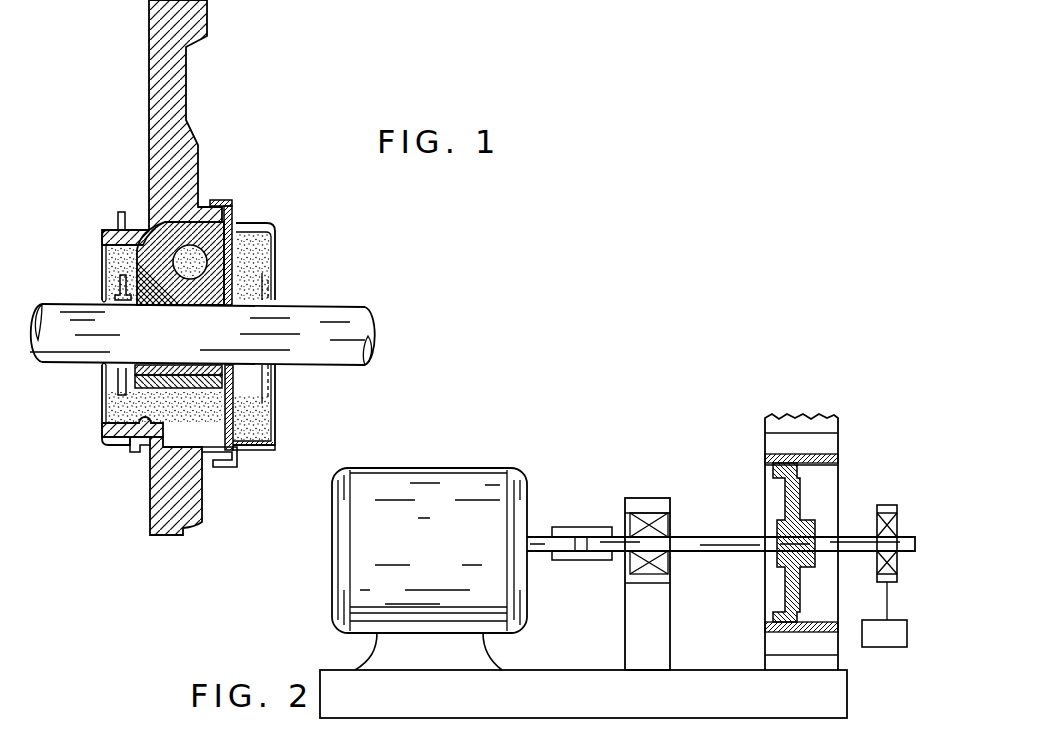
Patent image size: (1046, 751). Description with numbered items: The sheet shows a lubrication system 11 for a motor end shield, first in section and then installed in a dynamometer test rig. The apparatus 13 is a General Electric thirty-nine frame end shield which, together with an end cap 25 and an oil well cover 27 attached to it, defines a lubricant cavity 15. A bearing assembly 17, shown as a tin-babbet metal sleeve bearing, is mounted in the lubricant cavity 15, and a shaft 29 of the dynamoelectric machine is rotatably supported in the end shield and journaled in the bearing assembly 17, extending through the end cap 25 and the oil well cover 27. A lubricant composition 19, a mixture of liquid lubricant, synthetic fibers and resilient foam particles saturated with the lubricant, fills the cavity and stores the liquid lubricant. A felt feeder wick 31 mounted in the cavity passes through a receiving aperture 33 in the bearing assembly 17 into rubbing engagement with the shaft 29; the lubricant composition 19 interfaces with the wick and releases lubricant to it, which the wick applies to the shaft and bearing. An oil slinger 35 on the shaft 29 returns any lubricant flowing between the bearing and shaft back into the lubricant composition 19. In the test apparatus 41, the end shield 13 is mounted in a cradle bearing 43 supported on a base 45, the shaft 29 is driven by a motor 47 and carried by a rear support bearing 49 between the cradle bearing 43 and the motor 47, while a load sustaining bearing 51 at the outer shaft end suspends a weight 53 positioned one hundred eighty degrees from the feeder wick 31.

In FIG. 1, the lubrication system 11 is at (208, 188).
In FIG. 1, the apparatus (end shield) 13 is at (185, 86).
In FIG. 2, the apparatus (end shield) 13 is at (802, 492).
In FIG. 1, the lubricant cavity 15 is at (144, 440).
In FIG. 1, the bearing assembly 17 is at (205, 300).
In FIG. 1, the lubricant composition 19 is at (245, 244).
In FIG. 1, the end cap 25 is at (100, 429).
In FIG. 1, the oil well cover 27 is at (278, 429).
In FIG. 1, the shaft 29 is at (335, 308).
In FIG. 2, the shaft 29 is at (719, 538).
In FIG. 1, the feeder wick 31 is at (233, 201).
In FIG. 1, the receiving aperture 33 is at (170, 306).
In FIG. 1, the oil slinger 35 is at (108, 291).
In FIG. 2, the test apparatus 41 is at (645, 461).
In FIG. 2, the cradle bearing 43 is at (836, 458).
In FIG. 2, the base 45 is at (618, 701).
In FIG. 2, the motor 47 is at (462, 558).
In FIG. 2, the rear support bearing 49 is at (651, 510).
In FIG. 2, the load bearing 51 is at (897, 512).
In FIG. 2, the weight 53 is at (882, 648).